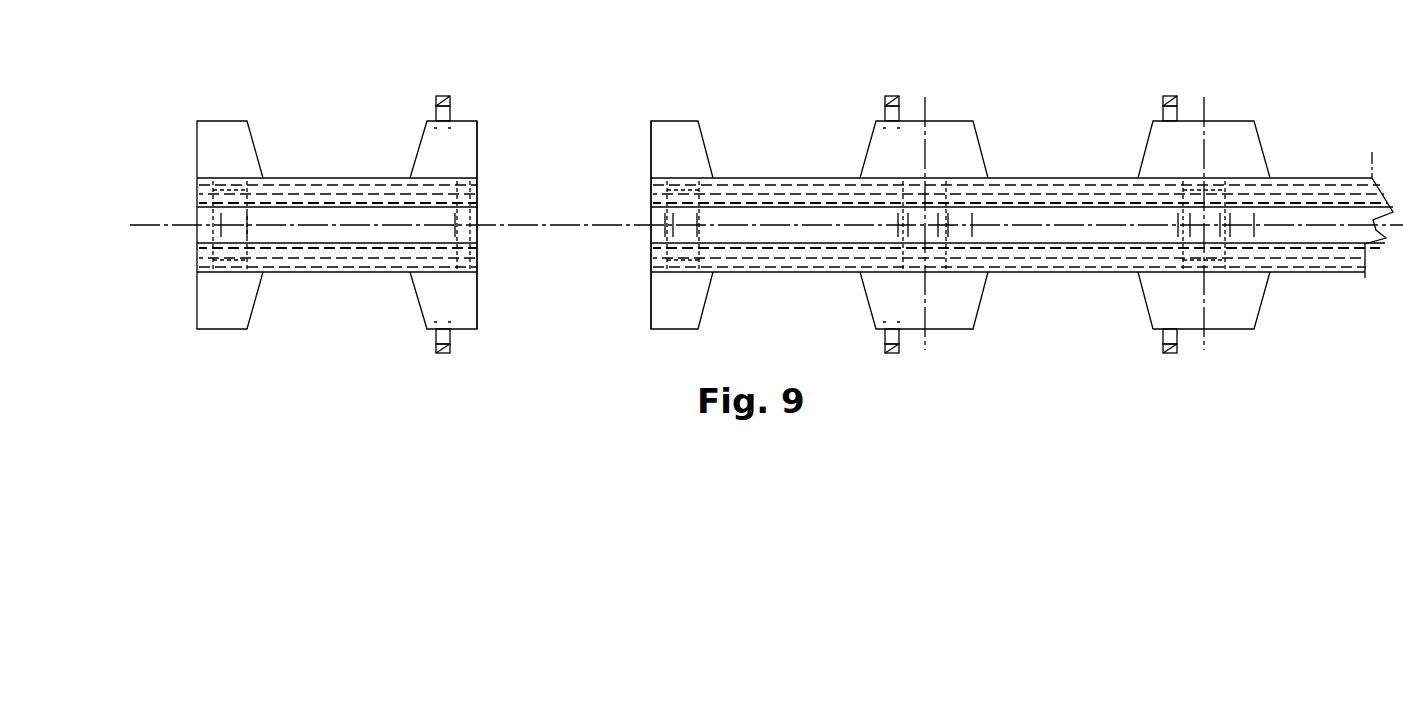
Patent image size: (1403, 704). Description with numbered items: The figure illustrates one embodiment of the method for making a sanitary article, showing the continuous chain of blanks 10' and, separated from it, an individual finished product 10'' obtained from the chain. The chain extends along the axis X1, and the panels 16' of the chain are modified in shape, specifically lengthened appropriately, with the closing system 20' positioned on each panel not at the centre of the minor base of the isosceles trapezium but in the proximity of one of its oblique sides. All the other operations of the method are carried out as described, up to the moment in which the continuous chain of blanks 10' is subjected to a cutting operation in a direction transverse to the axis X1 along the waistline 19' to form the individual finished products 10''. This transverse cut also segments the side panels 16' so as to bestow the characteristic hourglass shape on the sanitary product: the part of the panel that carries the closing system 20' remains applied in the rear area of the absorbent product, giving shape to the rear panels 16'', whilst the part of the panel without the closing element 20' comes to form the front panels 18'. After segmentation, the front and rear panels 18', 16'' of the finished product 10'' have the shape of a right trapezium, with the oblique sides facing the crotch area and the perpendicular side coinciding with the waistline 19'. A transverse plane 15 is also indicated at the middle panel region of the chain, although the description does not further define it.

The continuous chain of blanks 10' is at (1022, 191).
The finished product 10'' is at (337, 328).
The joint plane 15 is at (978, 175).
The panel 16' is at (893, 208).
The rear panel 16'' is at (490, 195).
The front panel 18' is at (268, 166).
The waistline 19' is at (564, 222).
The closing system 20' is at (967, 409).
The axis X1 is at (766, 134).